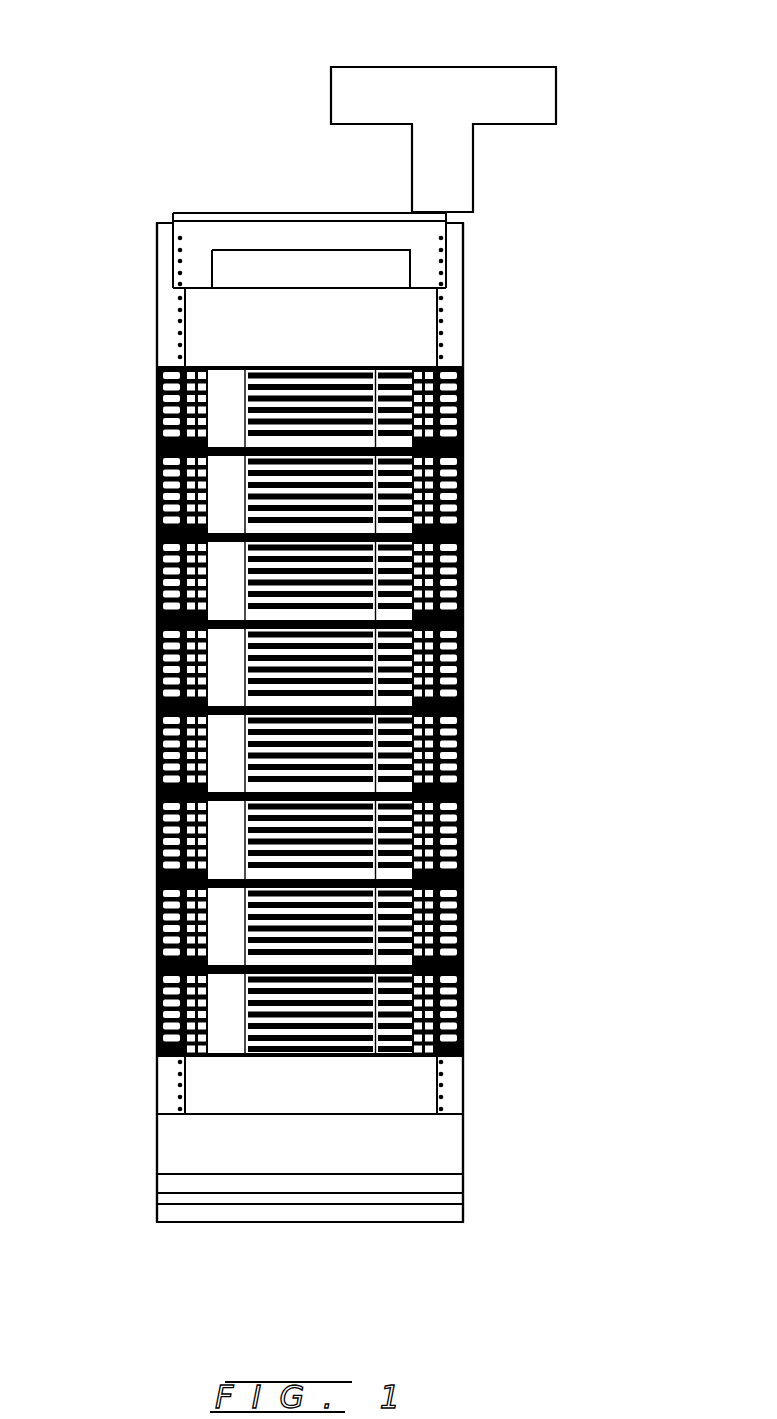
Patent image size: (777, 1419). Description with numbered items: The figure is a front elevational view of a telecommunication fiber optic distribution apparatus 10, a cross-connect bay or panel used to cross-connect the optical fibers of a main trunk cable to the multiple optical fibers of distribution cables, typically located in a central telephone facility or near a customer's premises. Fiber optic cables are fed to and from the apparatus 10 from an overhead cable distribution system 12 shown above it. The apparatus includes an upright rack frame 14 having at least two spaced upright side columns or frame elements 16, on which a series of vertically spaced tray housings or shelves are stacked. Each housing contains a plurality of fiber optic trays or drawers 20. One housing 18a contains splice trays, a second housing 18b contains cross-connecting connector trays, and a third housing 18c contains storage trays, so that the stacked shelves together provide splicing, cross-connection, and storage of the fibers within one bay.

The telecommunication fiber optic distribution apparatus 10 is at (484, 282).
The overhead cable distribution system 12 is at (489, 55).
The upright rack frame 14 is at (242, 230).
The upright side columns 16 is at (167, 332).
The housing 18a is at (443, 497).
The second housing 18b is at (158, 630).
The third housing 18c is at (443, 840).
The fiber optic trays 20 is at (408, 554).